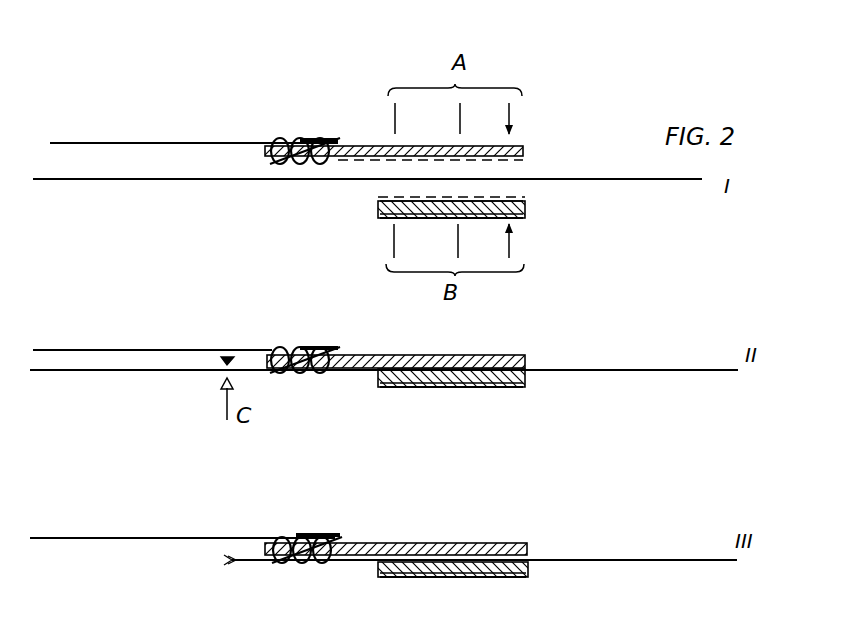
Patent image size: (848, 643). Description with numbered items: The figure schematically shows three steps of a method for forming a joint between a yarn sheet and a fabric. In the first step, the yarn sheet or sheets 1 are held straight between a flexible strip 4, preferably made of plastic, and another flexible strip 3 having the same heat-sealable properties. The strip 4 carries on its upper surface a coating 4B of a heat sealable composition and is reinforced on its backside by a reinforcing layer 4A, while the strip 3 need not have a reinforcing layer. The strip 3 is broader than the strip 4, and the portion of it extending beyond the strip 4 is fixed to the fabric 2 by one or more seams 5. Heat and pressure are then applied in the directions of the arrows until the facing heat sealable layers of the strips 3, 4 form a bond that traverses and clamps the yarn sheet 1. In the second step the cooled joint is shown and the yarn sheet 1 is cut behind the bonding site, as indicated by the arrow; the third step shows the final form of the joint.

The yarn sheet 1 is at (600, 160).
The fabric 2 is at (207, 130).
The flexible strip 3 is at (523, 148).
The flexible strip 4 is at (526, 211).
The reinforcing layer 4A is at (380, 217).
The coating of heat sealable composition 4B is at (380, 200).
The seam 5 is at (325, 138).